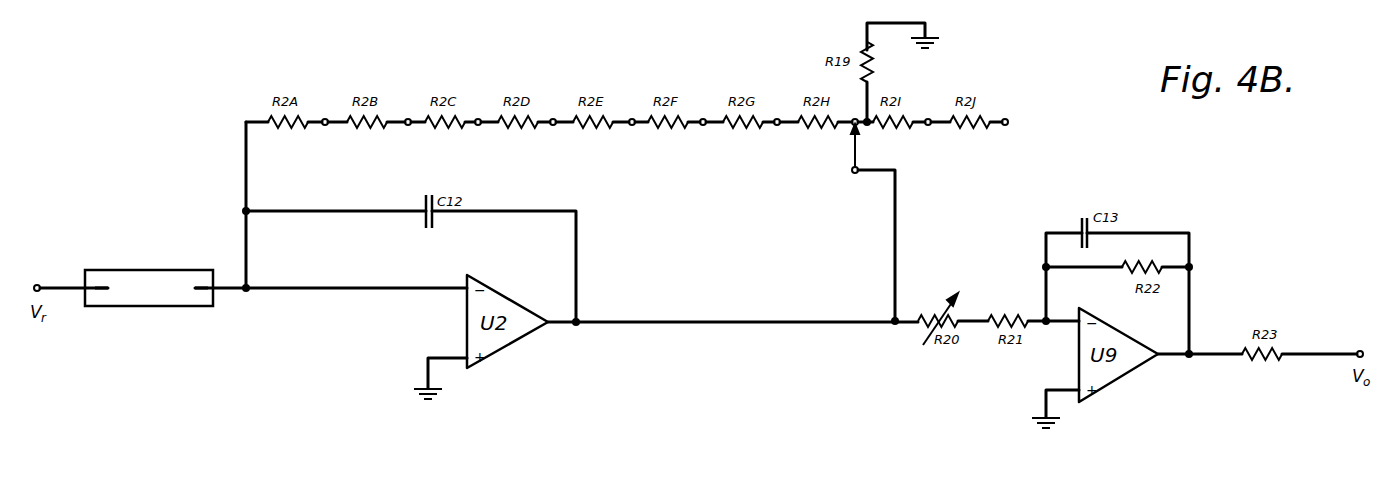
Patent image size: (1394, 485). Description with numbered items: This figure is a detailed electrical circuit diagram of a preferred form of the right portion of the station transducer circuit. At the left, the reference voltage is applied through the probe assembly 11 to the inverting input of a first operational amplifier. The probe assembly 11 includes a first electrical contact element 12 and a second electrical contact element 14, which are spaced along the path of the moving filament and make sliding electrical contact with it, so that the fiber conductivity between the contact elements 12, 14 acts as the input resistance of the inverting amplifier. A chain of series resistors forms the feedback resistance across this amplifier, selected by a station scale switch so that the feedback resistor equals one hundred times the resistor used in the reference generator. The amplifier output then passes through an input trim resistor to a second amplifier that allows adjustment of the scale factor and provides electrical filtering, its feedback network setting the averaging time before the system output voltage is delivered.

The probe assembly 11 is at (160, 310).
The first electrical contact element 12 is at (107, 288).
The second electrical contact element 14 is at (195, 288).